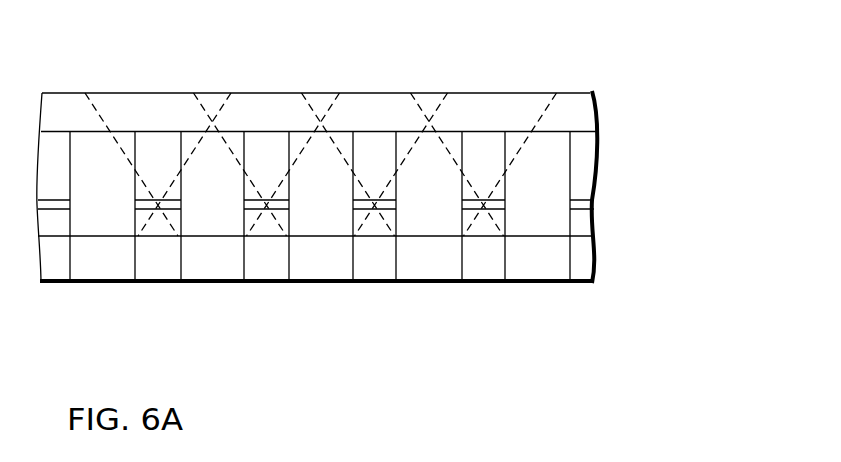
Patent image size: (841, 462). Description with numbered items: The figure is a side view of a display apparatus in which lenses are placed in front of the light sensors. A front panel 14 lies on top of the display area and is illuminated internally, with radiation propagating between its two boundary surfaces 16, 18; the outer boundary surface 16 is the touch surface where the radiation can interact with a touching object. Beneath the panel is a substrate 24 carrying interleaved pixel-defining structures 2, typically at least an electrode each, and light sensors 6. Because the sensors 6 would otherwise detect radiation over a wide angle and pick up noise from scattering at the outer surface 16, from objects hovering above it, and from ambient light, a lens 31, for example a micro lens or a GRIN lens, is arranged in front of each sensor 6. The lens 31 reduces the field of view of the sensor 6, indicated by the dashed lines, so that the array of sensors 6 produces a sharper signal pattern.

The front panel 14 is at (572, 82).
The outer boundary surface 16 is at (100, 93).
The boundary surface 18 is at (551, 132).
The substrate 24 is at (560, 283).
The pixel-defining structure 2 is at (97, 281).
The sensor 6 is at (145, 281).
The lens 31 is at (152, 204).